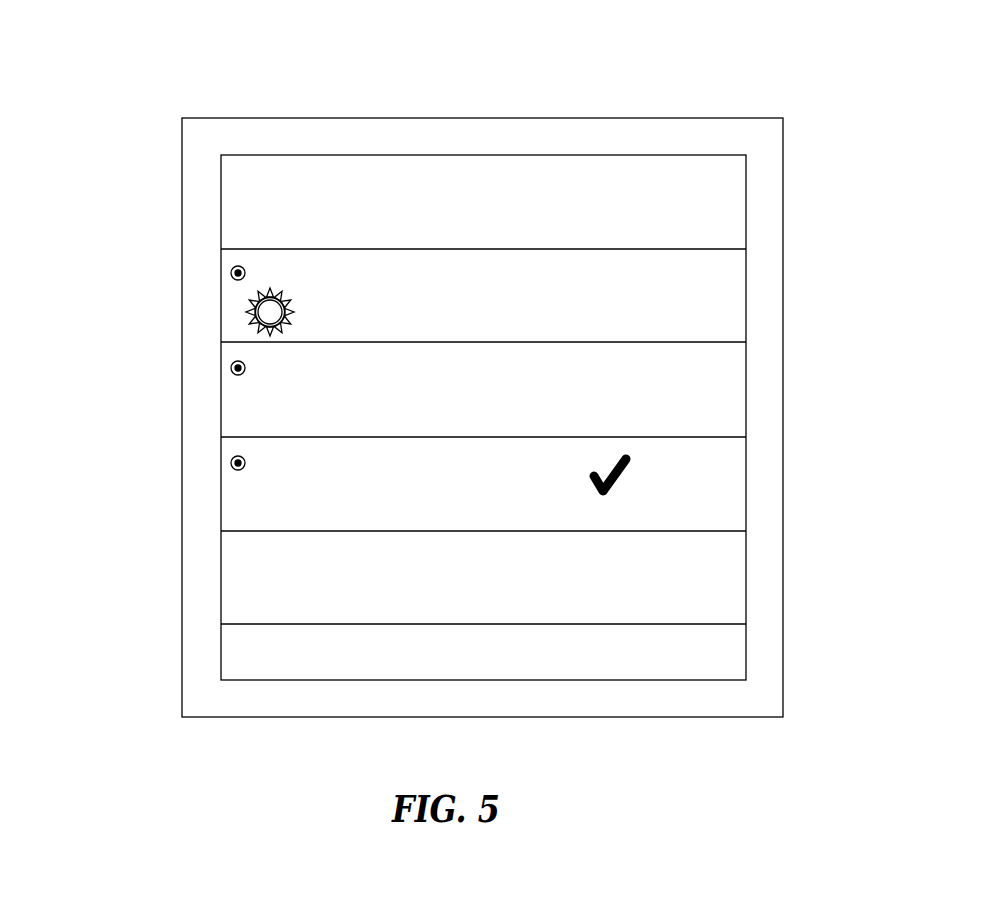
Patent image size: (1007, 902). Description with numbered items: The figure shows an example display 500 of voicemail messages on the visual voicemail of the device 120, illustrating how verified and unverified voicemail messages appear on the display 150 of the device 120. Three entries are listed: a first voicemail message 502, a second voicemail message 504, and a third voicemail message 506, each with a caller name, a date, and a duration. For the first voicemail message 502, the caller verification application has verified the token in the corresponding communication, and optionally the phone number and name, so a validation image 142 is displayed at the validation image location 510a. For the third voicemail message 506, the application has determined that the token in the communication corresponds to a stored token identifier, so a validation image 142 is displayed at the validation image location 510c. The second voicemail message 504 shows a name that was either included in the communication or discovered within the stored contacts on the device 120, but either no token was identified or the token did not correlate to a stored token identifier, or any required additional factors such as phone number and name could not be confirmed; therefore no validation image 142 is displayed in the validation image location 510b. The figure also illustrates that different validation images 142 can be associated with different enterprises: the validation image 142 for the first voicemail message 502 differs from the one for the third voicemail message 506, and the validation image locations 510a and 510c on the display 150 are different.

The display 500 is at (136, 92).
The device 120 is at (708, 118).
The display 150 is at (768, 562).
The validation image 142 is at (250, 302).
The first voicemail message 502 is at (222, 293).
The second voicemail message 504 is at (220, 390).
The third voicemail message 506 is at (220, 486).
The validation image location 510a is at (242, 328).
The validation image location 510b is at (647, 403).
The validation image location 510c is at (643, 494).